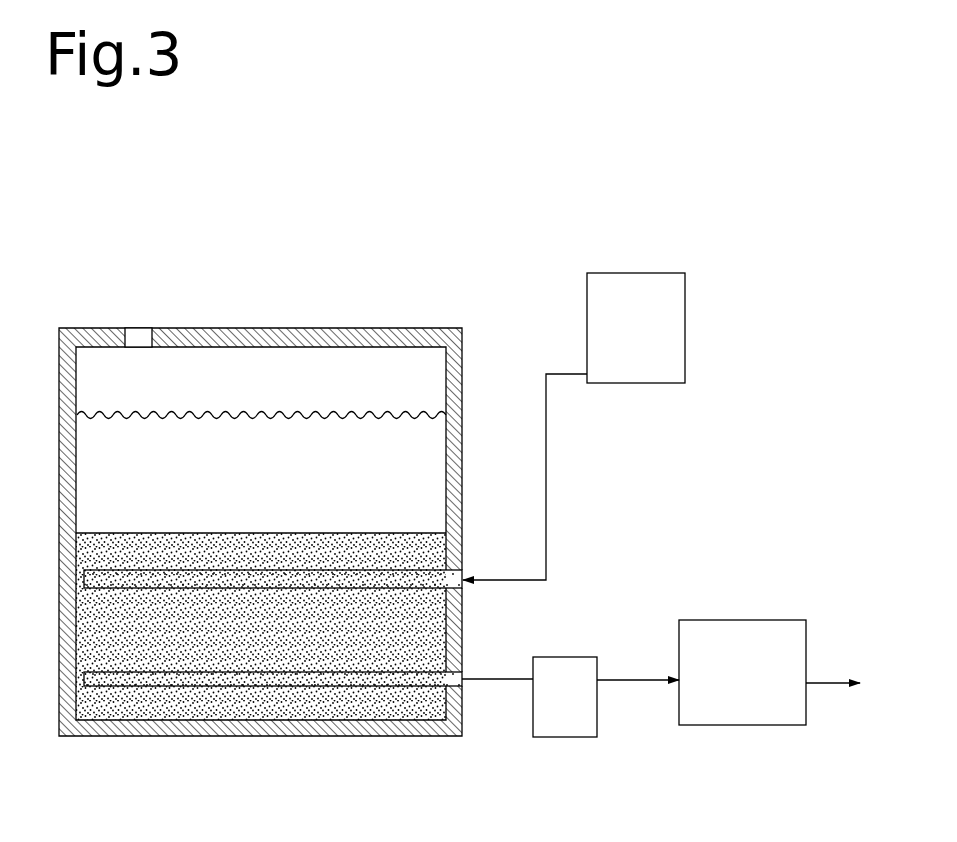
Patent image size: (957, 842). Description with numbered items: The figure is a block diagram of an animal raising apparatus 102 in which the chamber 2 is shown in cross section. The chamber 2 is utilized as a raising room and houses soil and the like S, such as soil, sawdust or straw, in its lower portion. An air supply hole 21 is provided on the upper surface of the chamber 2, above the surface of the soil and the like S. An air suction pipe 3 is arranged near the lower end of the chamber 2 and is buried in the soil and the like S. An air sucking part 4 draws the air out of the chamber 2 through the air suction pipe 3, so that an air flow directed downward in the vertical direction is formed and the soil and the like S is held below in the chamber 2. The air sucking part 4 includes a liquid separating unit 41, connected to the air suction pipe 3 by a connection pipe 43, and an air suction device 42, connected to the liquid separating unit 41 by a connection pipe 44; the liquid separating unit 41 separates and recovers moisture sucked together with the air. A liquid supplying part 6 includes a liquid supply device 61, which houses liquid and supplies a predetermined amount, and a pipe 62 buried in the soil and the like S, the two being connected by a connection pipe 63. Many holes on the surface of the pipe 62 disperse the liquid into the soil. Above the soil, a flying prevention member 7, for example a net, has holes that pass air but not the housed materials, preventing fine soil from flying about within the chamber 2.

The chamber 2 is at (232, 337).
The air supply hole 21 is at (137, 345).
The air suction pipe 3 is at (190, 680).
The air sucking part 4 is at (678, 590).
The liquid separating unit 41 is at (559, 663).
The air suction device 42 is at (758, 632).
The connection pipe 43 is at (508, 681).
The connection pipe 44 is at (640, 681).
The liquid supplying part 6 is at (653, 422).
The liquid supply device 61 is at (673, 283).
The pipe 62 is at (143, 572).
The connection pipe 63 is at (548, 502).
The flying prevention member 7 is at (275, 425).
The soil and the like S is at (295, 539).
The animal raising apparatus 102 is at (508, 287).